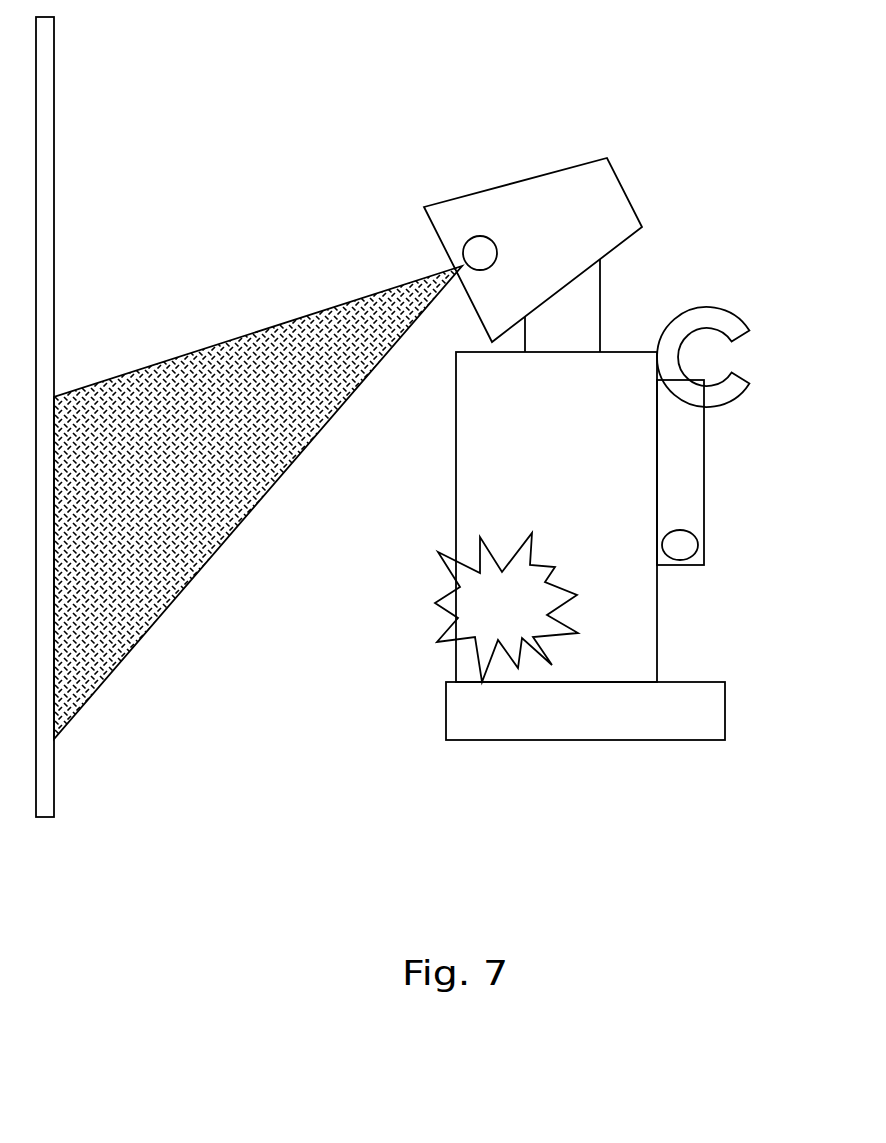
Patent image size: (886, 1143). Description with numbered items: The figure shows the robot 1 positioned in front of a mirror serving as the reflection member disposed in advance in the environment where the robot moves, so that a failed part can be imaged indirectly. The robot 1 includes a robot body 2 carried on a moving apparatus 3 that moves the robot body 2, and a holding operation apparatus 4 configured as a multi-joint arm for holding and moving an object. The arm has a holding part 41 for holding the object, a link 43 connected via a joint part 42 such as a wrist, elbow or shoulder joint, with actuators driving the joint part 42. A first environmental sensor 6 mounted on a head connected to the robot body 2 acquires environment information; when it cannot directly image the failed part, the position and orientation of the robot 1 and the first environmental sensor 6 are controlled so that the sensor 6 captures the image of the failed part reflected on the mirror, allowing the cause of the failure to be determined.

The robot 1 is at (724, 95).
The robot body 2 is at (458, 453).
The moving apparatus 3 is at (726, 710).
The holding operation apparatus 4 is at (704, 457).
The first environmental sensor 6 is at (468, 251).
The holding part 41 is at (716, 318).
The joint part 42 is at (683, 553).
The link 43 is at (693, 503).